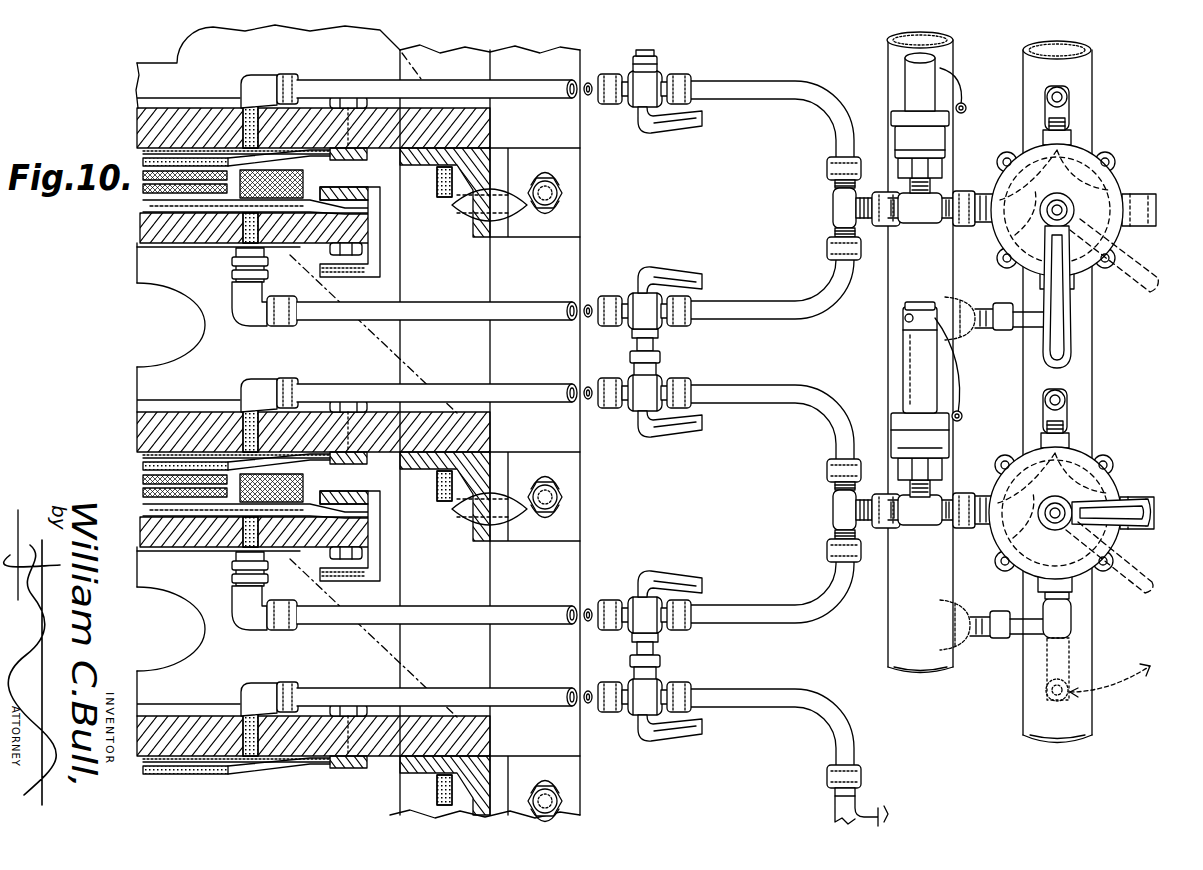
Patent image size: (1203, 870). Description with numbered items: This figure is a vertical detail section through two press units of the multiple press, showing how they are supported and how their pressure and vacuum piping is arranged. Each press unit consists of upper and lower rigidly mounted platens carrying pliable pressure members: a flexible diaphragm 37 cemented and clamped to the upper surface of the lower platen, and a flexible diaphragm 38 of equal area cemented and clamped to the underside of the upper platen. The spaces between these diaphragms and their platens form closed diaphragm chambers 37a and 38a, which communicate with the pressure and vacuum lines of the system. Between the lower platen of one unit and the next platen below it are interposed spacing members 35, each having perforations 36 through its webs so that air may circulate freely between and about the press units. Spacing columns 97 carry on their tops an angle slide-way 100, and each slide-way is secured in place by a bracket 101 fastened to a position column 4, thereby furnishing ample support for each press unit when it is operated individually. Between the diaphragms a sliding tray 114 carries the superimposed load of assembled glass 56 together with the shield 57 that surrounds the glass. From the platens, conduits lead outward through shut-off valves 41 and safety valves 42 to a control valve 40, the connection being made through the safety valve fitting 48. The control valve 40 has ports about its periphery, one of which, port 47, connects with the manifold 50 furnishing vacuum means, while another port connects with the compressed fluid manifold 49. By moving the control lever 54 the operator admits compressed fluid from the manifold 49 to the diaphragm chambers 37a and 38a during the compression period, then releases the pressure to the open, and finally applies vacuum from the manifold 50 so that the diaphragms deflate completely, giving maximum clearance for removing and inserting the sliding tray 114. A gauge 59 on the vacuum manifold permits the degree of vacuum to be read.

The position column 4 is at (485, 431).
The spacing member 35 is at (296, 371).
The perforation 36 is at (172, 285).
The flexible diaphragm 37 is at (143, 210).
The diaphragm chamber 37a is at (143, 244).
The flexible diaphragm 38 is at (142, 152).
The diaphragm chamber 38a is at (167, 150).
The control valve 40 is at (1078, 166).
The shut-off valve 41 is at (646, 84).
The safety valve 42 is at (915, 76).
The port 47 is at (1068, 108).
The safety valve fitting 48 is at (923, 204).
The compressed fluid manifold 49 is at (920, 352).
The vacuum manifold 50 is at (1093, 76).
The control lever 54 is at (1062, 321).
The assembled glass 56 is at (145, 186).
The shield 57 is at (300, 186).
The vacuum gauge 59 is at (758, 96).
The spacing column 97 is at (412, 395).
The angle slide-way 100 is at (476, 228).
The bracket 101 is at (545, 497).
The sliding tray 114 is at (372, 190).